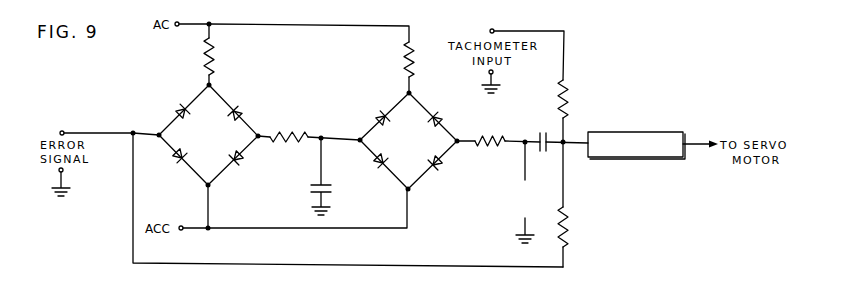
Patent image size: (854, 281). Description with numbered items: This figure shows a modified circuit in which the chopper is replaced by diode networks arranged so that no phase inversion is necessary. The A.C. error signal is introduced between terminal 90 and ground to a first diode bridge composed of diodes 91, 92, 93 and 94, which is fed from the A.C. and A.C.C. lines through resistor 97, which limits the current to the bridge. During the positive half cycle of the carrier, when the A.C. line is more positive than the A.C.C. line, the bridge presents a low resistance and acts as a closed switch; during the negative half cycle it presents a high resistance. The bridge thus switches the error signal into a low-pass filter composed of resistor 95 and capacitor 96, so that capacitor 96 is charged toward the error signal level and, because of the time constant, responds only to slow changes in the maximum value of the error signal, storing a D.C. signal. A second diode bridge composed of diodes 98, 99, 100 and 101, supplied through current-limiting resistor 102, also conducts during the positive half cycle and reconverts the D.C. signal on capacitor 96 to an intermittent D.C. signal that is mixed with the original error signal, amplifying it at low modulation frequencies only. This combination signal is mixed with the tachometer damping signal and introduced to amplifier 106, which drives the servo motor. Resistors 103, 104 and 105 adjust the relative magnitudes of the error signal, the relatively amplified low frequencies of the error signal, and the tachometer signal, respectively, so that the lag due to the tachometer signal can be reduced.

The terminal 90 is at (62, 130).
The diode 91 is at (180, 104).
The diode 92 is at (240, 106).
The diode 93 is at (237, 168).
The diode 94 is at (178, 166).
The resistor 95 is at (289, 129).
The capacitor 96 is at (310, 188).
The resistor 97 is at (222, 62).
The diode 98 is at (381, 108).
The diode 99 is at (438, 110).
The diode 100 is at (437, 170).
The diode 101 is at (384, 168).
The resistor 102 is at (400, 55).
The resistor 103 is at (571, 231).
The resistor 104 is at (484, 151).
The resistor 105 is at (571, 92).
The amplifier 106 is at (651, 158).